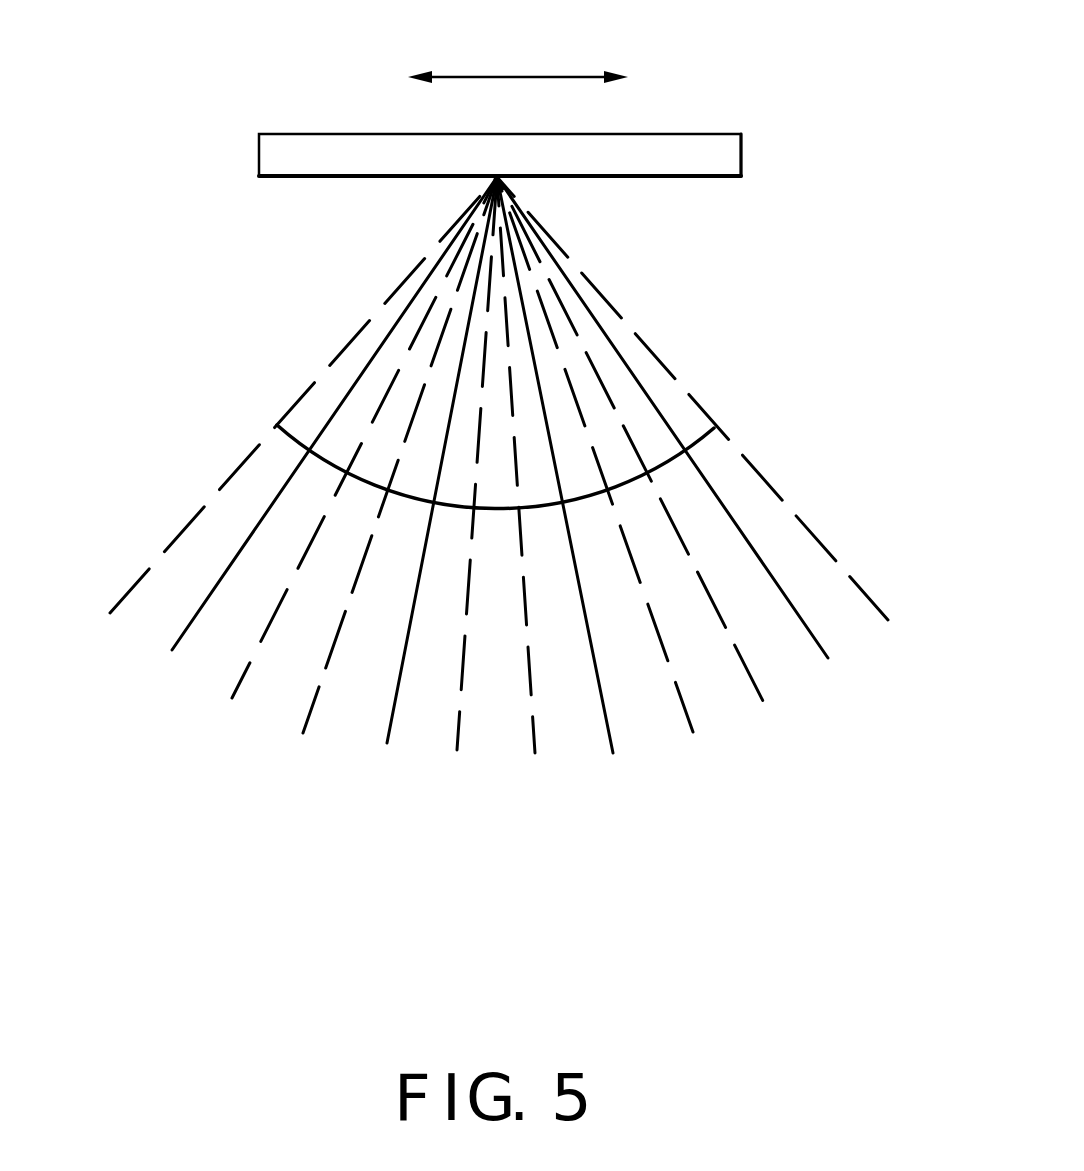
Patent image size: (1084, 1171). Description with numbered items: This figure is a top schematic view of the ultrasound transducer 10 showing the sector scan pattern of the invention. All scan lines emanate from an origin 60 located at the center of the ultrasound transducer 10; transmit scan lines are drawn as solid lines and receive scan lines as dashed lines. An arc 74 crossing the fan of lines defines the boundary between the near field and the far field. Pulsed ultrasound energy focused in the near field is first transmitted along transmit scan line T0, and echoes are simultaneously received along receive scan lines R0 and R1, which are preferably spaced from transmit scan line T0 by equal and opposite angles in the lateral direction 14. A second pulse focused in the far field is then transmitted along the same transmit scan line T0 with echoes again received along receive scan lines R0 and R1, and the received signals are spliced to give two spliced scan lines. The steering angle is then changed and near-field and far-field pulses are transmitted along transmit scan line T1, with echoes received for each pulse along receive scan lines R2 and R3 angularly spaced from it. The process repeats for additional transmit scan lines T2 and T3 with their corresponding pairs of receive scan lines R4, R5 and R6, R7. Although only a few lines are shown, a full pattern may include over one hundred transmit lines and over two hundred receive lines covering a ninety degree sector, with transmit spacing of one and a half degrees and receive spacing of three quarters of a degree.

The ultrasound transducer 10 is at (762, 163).
The lateral direction 14 is at (512, 71).
The origin 60 is at (494, 175).
The arc 74 is at (685, 441).
The receive scan line R0 is at (110, 613).
The receive scan line R1 is at (232, 698).
The receive scan line R2 is at (303, 733).
The receive scan line R3 is at (457, 750).
The receive scan line R4 is at (535, 753).
The receive scan line R5 is at (693, 732).
The receive scan line R6 is at (765, 705).
The receive scan line R7 is at (888, 620).
The transmit scan line T0 is at (172, 650).
The transmit scan line T1 is at (387, 743).
The transmit scan line T2 is at (613, 753).
The transmit scan line T3 is at (828, 658).